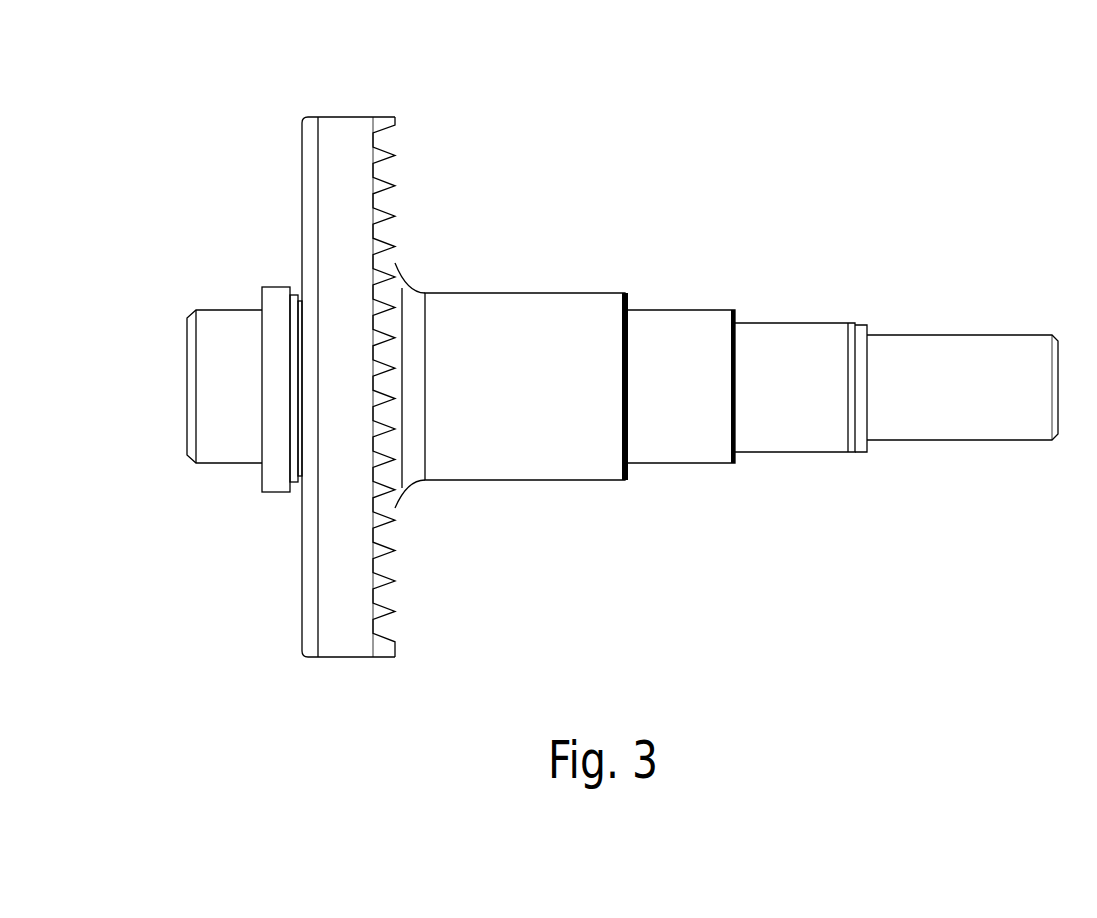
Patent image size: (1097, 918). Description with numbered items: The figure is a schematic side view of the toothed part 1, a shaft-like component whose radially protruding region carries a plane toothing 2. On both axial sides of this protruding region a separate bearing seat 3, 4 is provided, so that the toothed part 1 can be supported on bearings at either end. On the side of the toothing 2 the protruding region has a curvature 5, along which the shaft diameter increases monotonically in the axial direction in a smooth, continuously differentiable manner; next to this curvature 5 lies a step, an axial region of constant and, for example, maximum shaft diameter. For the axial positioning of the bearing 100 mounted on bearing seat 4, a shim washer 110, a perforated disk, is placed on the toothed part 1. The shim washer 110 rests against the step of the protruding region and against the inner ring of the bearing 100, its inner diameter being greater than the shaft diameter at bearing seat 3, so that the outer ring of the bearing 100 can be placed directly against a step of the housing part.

The toothed part 1 is at (528, 349).
The plane toothing 2 is at (397, 189).
The bearing seat 3 is at (236, 298).
The bearing seat 4 is at (674, 307).
The curvature 5 is at (416, 488).
The bearing 100 is at (273, 298).
The shim washer 110 is at (293, 470).